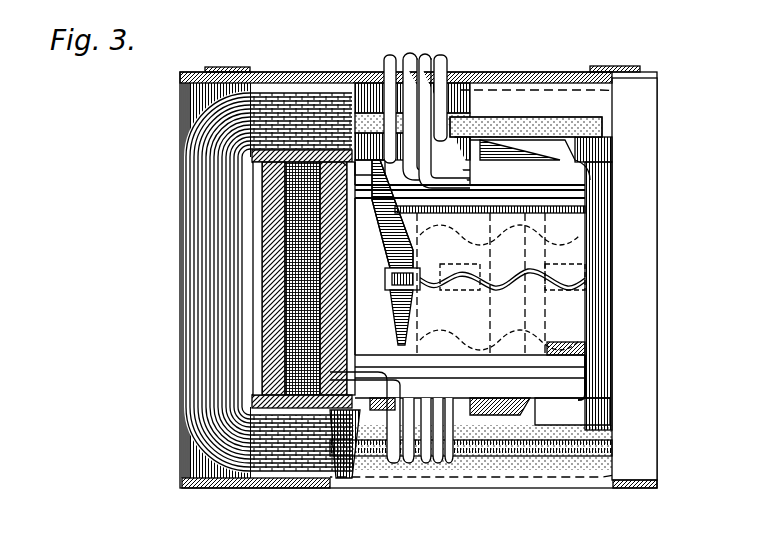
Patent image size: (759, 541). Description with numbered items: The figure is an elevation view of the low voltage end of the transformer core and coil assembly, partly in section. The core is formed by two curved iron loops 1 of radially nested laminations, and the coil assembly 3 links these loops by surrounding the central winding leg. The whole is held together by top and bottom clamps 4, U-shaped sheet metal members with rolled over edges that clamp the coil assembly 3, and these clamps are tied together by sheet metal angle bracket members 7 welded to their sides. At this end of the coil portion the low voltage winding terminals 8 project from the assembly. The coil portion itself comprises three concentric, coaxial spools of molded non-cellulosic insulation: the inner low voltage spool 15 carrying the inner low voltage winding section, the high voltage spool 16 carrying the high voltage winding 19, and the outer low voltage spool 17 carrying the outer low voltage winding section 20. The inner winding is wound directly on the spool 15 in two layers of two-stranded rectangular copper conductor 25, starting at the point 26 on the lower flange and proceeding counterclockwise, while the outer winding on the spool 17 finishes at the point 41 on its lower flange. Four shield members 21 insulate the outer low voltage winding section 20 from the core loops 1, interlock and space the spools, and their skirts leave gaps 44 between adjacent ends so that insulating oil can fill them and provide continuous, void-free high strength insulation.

The curved iron loop 1 is at (272, 95).
The coil assembly 3 is at (519, 336).
The top and bottom clamps 4 is at (524, 76).
The angle bracket member 7 is at (652, 112).
The low voltage winding terminals 8 is at (415, 48).
The inner low voltage spool 15 is at (342, 165).
The high voltage spool 16 is at (322, 152).
The outer low voltage spool 17 is at (268, 398).
The high voltage winding 19 is at (300, 229).
The outer low voltage winding section 20 is at (260, 330).
The shield members 21 is at (255, 355).
The two-stranded rectangular copper conductor 25 is at (446, 54).
The winding starting point 26 is at (374, 445).
The winding finish point 41 is at (446, 428).
The gaps 44 is at (262, 292).